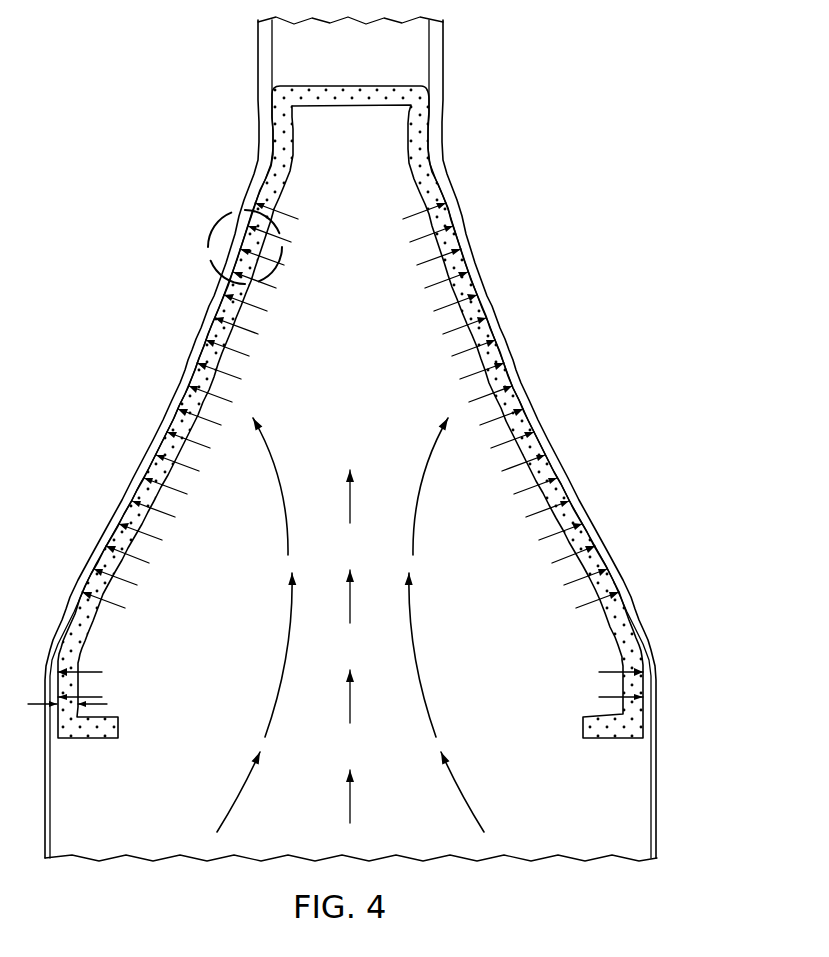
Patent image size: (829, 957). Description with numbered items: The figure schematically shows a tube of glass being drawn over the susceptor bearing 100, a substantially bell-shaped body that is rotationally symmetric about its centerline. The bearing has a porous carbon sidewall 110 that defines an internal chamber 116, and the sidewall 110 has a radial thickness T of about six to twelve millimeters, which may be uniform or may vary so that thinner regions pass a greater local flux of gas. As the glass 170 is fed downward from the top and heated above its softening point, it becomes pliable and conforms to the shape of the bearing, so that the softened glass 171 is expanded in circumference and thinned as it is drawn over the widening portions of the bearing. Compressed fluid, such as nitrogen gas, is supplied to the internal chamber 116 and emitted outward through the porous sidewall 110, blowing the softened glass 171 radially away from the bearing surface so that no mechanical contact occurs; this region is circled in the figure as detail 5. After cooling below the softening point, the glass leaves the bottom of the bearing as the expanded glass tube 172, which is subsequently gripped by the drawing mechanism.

The glass 170 is at (443, 45).
The softened glass 171 is at (465, 230).
The expanded glass tube 172 is at (657, 793).
The susceptor bearing 100 is at (348, 85).
The sidewall 110 is at (614, 646).
The internal chamber 116 is at (104, 641).
The detail region of FIG. 5 is at (207, 238).
The radial thickness T is at (59, 705).